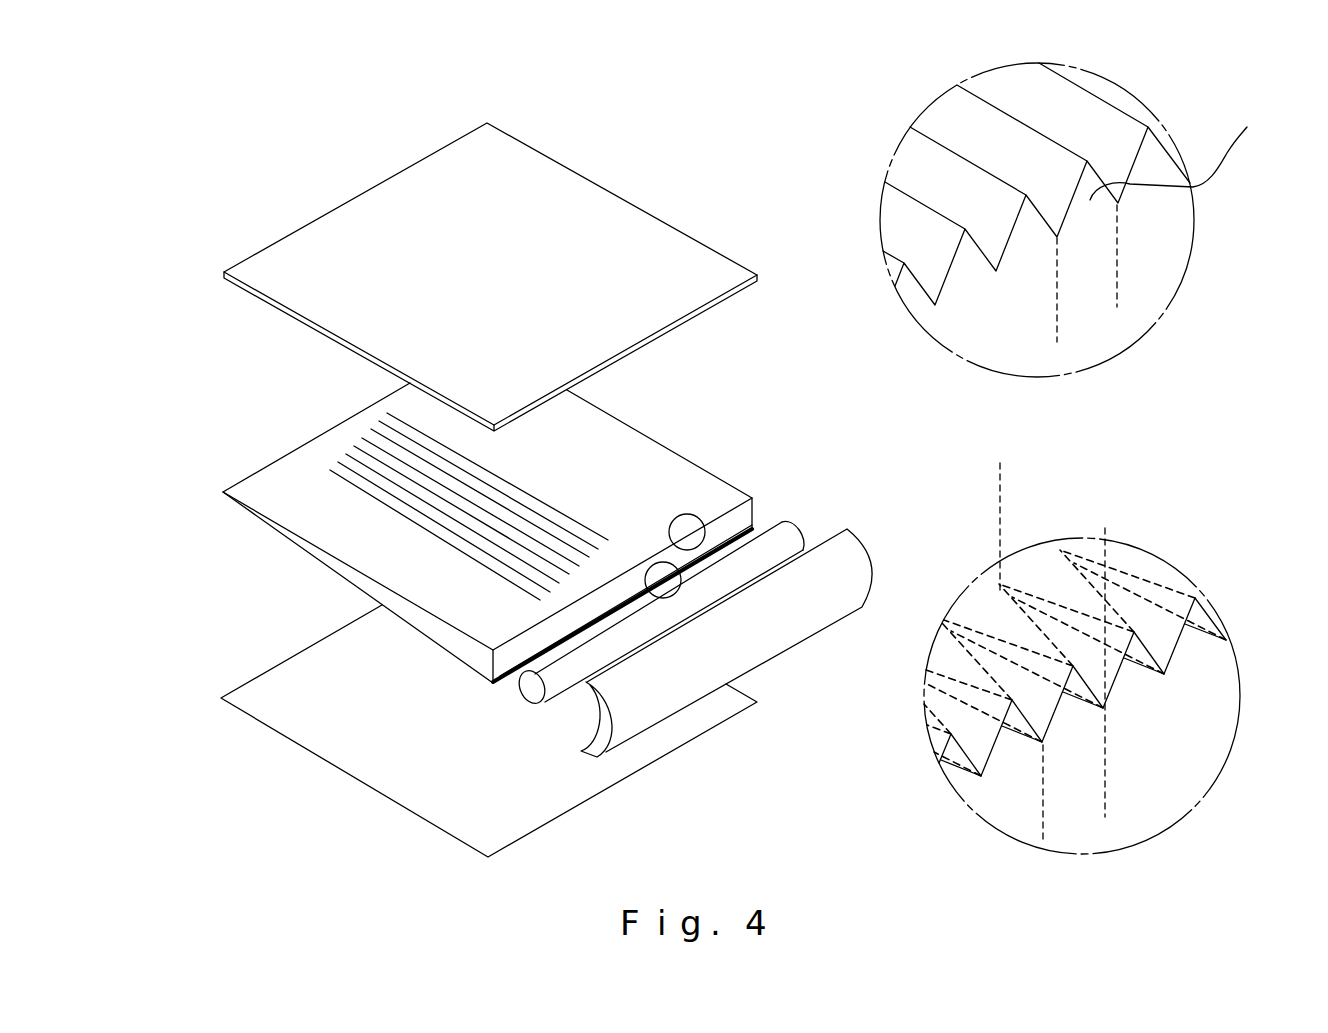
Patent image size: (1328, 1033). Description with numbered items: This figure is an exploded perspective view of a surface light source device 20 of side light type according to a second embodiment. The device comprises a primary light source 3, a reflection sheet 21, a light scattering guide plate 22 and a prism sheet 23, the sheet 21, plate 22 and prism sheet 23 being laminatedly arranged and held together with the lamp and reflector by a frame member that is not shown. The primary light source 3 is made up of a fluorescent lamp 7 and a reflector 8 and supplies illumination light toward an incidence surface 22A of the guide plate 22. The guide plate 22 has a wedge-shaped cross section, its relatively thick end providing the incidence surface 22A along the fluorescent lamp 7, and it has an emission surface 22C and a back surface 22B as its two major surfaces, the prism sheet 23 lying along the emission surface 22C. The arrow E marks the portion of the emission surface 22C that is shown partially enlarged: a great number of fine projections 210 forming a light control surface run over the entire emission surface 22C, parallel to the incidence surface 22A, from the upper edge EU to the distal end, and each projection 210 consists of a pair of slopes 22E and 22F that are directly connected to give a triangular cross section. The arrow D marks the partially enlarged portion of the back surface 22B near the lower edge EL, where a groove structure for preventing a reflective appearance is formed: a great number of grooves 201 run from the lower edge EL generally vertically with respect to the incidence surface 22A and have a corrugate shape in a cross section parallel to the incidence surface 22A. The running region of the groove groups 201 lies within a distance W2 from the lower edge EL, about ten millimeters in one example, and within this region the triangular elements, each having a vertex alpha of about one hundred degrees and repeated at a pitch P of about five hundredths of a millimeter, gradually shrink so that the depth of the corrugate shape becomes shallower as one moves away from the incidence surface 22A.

The surface light source device 20 is at (262, 187).
The reflection sheet 21 is at (535, 820).
The light scattering guide plate 22 is at (712, 367).
The incidence surface 22A is at (753, 520).
The back surface 22B is at (265, 548).
The emission surface 22C is at (623, 435).
The slope 22E is at (906, 158).
The slope 22F is at (950, 127).
The prism sheet 23 is at (605, 216).
The primary light source 3 is at (620, 654).
The fluorescent lamp 7 is at (560, 675).
The reflector 8 is at (622, 707).
The grooves 201 is at (1073, 712).
The projections 210 is at (1158, 152).
The upper edge EU is at (650, 565).
The lower edge EL is at (530, 668).
The enlarged portion E is at (688, 514).
The arrow D is at (735, 612).
The repeating pitch P is at (1142, 275).
The distance W2 is at (1107, 528).
The vertex alpha is at (988, 273).